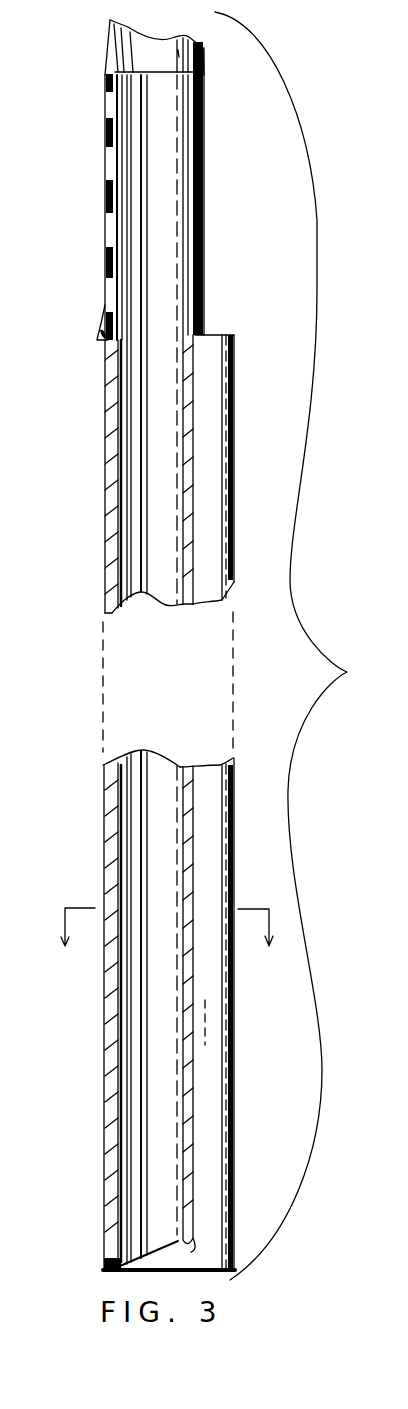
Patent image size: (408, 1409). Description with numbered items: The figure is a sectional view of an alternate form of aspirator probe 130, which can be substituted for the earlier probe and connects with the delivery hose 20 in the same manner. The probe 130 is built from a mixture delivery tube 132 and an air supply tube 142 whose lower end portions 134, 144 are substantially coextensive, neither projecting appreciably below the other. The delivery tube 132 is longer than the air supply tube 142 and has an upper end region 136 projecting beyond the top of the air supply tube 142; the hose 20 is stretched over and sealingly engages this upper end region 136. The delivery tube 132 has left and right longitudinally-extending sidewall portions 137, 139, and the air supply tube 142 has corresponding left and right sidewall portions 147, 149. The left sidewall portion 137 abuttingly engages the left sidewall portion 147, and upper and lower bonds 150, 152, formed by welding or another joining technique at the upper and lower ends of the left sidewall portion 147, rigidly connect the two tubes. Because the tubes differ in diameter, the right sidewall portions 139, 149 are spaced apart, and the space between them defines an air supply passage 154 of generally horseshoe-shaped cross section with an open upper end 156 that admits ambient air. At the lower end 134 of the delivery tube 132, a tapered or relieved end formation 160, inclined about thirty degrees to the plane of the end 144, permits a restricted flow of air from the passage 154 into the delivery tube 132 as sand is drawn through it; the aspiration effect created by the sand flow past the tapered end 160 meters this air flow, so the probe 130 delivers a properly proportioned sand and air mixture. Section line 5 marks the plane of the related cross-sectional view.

The hose 20 is at (105, 158).
The probe 130 is at (91, 520).
The mixture delivery tube 132 is at (145, 438).
The lower end portion 134 is at (116, 1275).
The upper end region 136 is at (160, 133).
The left sidewall portion 137 is at (124, 595).
The right sidewall portion 139 is at (168, 610).
The air supply tube 142 is at (243, 421).
The lower end portion 144 is at (188, 1270).
The left sidewall portion 147 is at (103, 612).
The right sidewall portion 149 is at (235, 582).
The upper bond 150 is at (99, 343).
The lower bond 152 is at (104, 1262).
The air supply passage 154 is at (205, 505).
The open upper end 156 is at (205, 347).
The relieved end formation 160 is at (192, 1242).
The section line 5- 5 is at (167, 934).